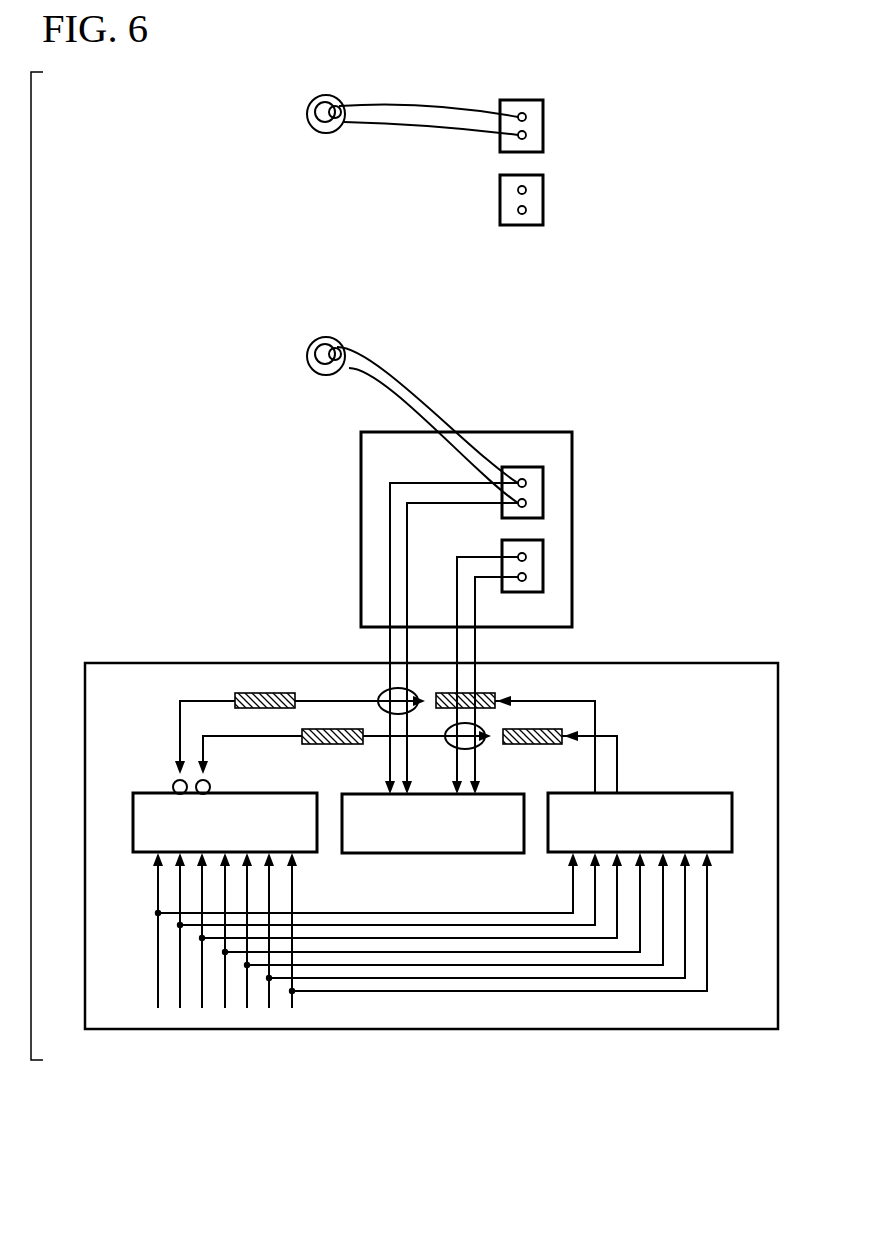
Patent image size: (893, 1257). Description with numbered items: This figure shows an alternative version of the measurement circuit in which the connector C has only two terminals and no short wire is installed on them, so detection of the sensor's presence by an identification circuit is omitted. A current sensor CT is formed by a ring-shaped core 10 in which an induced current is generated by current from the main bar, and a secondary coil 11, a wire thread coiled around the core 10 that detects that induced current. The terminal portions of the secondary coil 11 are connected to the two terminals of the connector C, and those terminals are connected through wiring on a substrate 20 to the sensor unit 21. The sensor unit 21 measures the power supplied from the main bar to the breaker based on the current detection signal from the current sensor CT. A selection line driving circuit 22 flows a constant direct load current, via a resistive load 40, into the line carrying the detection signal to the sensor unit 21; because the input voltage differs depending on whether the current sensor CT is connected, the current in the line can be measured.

The core 10 is at (309, 127).
The secondary coil 11 is at (341, 126).
The current sensor CT is at (404, 299).
The connector C is at (543, 126).
The substrate 20 is at (552, 416).
The resistive load 40 is at (238, 693).
The selection line driving circuit 22 is at (135, 832).
The sensor unit 21 is at (432, 855).